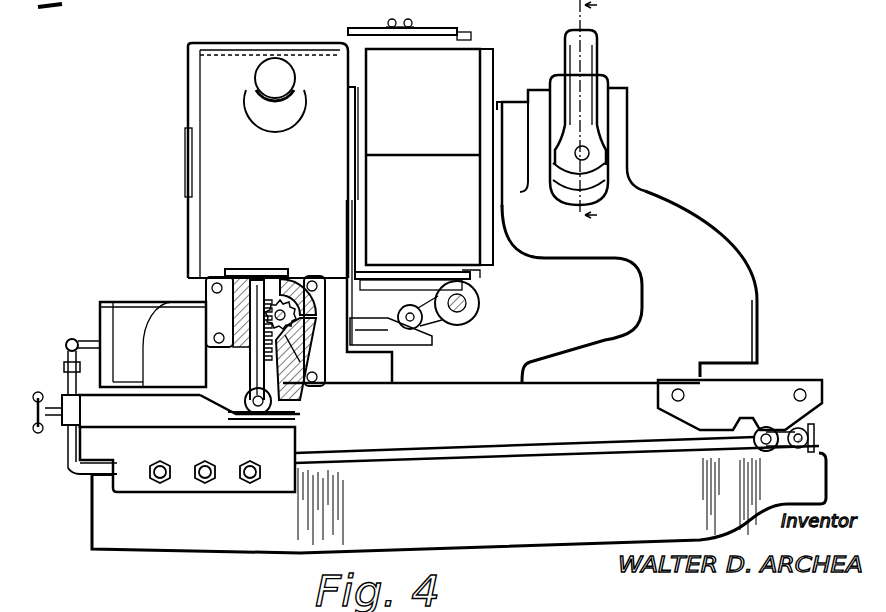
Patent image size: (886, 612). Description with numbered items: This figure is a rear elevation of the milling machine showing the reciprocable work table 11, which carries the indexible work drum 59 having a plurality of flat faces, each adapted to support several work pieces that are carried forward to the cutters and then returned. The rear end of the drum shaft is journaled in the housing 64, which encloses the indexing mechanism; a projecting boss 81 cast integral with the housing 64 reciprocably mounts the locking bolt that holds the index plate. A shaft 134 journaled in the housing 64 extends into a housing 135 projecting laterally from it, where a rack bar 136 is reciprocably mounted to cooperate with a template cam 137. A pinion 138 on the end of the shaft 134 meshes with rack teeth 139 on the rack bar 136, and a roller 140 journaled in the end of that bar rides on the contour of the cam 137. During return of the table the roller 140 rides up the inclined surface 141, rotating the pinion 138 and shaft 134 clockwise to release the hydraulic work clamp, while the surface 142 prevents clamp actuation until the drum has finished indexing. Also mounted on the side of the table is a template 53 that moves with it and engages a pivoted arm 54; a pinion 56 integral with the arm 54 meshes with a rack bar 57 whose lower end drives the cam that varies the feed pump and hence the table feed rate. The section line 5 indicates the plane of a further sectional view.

The section line 5- 5 is at (578, 121).
The work table 11 is at (430, 392).
The template 53 is at (753, 388).
The pivoted arm 54 is at (784, 448).
The pinion 56 is at (809, 430).
The rack bar 57 is at (812, 444).
The drum 59 is at (490, 58).
The housing 64 is at (205, 101).
The projecting boss 81 is at (258, 80).
The shaft 134 is at (298, 283).
The housing 135 is at (296, 275).
The rack bar 136 is at (249, 365).
The template cam 137 is at (84, 418).
The pinion 138 is at (290, 328).
The rack teeth 139 is at (300, 362).
The roller 140 is at (297, 424).
The inclined surface 141 is at (220, 406).
The surface 142 is at (163, 398).